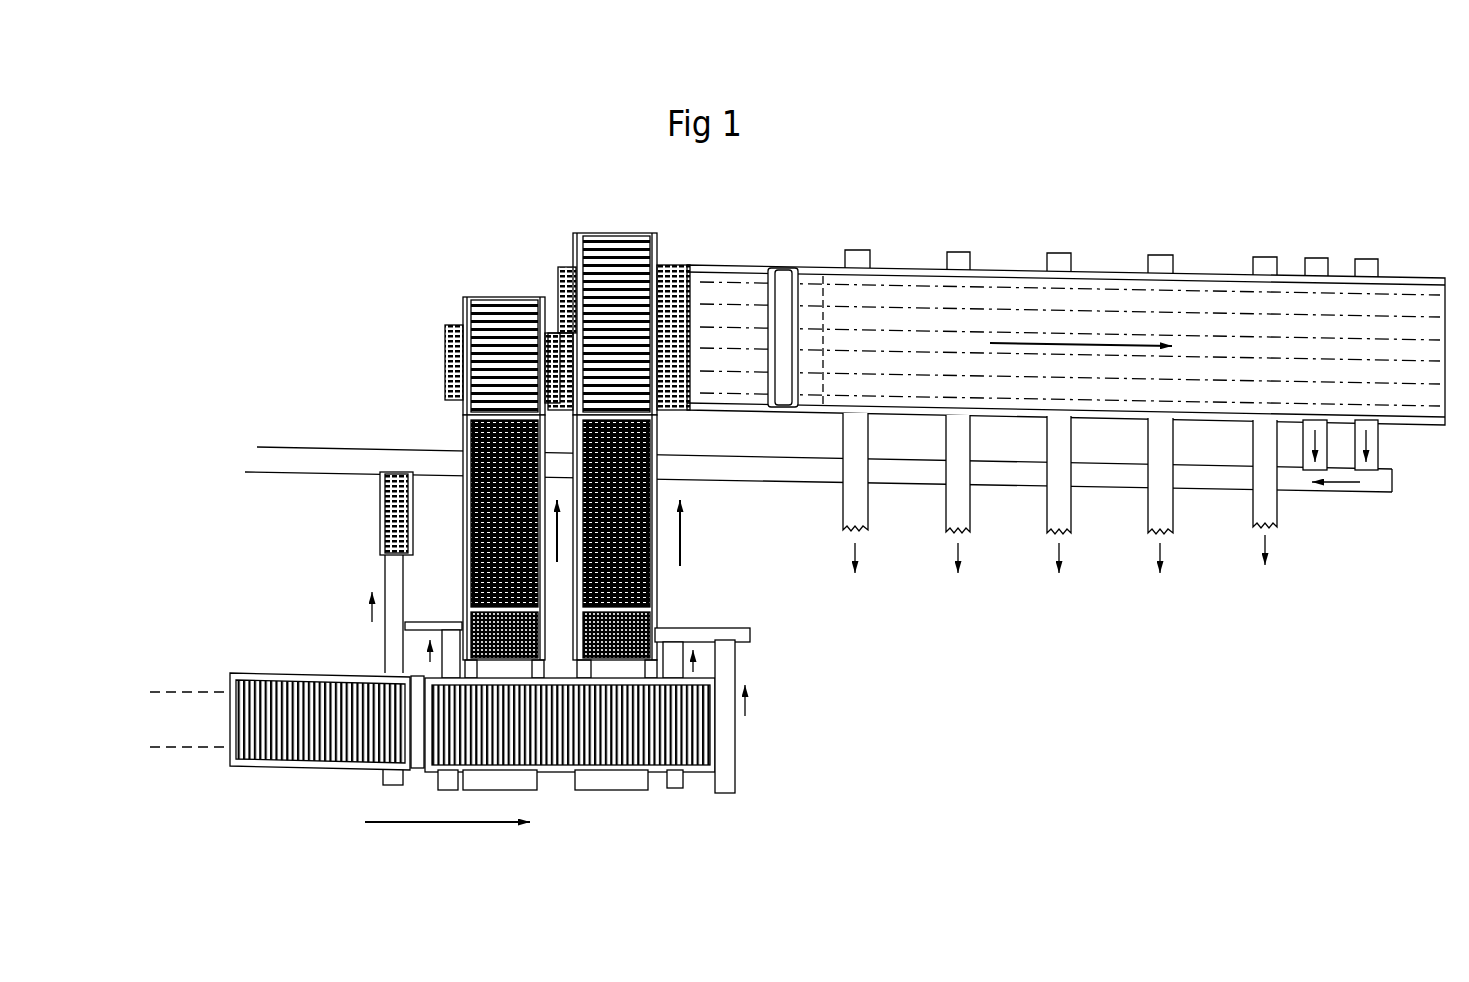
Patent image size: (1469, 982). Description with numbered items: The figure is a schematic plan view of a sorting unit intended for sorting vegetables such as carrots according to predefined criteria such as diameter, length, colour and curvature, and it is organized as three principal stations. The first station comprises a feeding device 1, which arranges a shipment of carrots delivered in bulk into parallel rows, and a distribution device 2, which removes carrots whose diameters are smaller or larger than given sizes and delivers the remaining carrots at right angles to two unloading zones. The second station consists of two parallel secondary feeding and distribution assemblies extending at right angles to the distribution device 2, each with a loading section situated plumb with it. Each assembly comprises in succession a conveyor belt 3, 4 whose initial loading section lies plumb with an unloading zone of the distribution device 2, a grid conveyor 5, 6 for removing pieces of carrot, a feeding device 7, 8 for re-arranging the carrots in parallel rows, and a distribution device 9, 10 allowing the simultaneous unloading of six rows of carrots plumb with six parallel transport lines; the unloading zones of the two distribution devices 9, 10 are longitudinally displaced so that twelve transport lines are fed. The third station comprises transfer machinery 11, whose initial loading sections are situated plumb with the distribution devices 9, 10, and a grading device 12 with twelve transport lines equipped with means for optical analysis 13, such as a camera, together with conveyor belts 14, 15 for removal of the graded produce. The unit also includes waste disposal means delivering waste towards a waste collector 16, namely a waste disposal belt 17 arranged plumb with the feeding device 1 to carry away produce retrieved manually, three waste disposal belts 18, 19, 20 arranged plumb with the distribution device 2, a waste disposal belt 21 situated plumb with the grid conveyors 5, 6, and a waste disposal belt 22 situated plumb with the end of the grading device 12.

The feeding device 1 is at (305, 745).
The distribution device 2 is at (640, 750).
The conveyor belt 3 is at (500, 789).
The conveyor belt 4 is at (630, 789).
The grid conveyor 5 is at (427, 623).
The grid conveyor 6 is at (652, 617).
The feeding device 7 is at (466, 578).
The feeding device 8 is at (653, 590).
The distribution device 9 is at (485, 356).
The distribution device 10 is at (613, 246).
The transfer machinery 11 is at (560, 269).
The grading device 12 is at (1010, 295).
The means for optical analysis 13 is at (782, 292).
The conveyor belt 14 is at (965, 516).
The conveyor belt 15 is at (1166, 516).
The waste collector 16 is at (266, 465).
The waste disposal belt 17 is at (393, 624).
The waste disposal belt 18 is at (440, 786).
The waste disposal belt 19 is at (678, 789).
The waste disposal belt 20 is at (721, 768).
The waste disposal belt 21 is at (737, 638).
The waste disposal belt 22 is at (1381, 460).